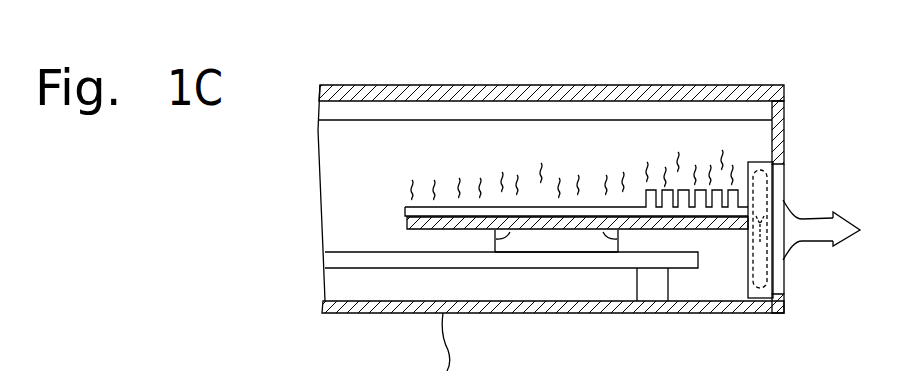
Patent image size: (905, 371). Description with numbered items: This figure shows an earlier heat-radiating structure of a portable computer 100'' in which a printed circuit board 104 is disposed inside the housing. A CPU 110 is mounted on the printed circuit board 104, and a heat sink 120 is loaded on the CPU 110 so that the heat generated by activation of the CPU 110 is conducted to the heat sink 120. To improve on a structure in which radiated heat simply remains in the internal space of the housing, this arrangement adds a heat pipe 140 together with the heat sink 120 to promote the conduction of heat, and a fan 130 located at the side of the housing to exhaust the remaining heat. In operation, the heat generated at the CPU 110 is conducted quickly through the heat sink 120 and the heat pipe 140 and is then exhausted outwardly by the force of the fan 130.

The portable computer 100'' is at (589, 166).
The heat sink 120 is at (405, 207).
The heat pipe 140 is at (415, 229).
The CPU 110 is at (575, 250).
The printed circuit board 104 is at (498, 260).
The fan 130 is at (748, 263).